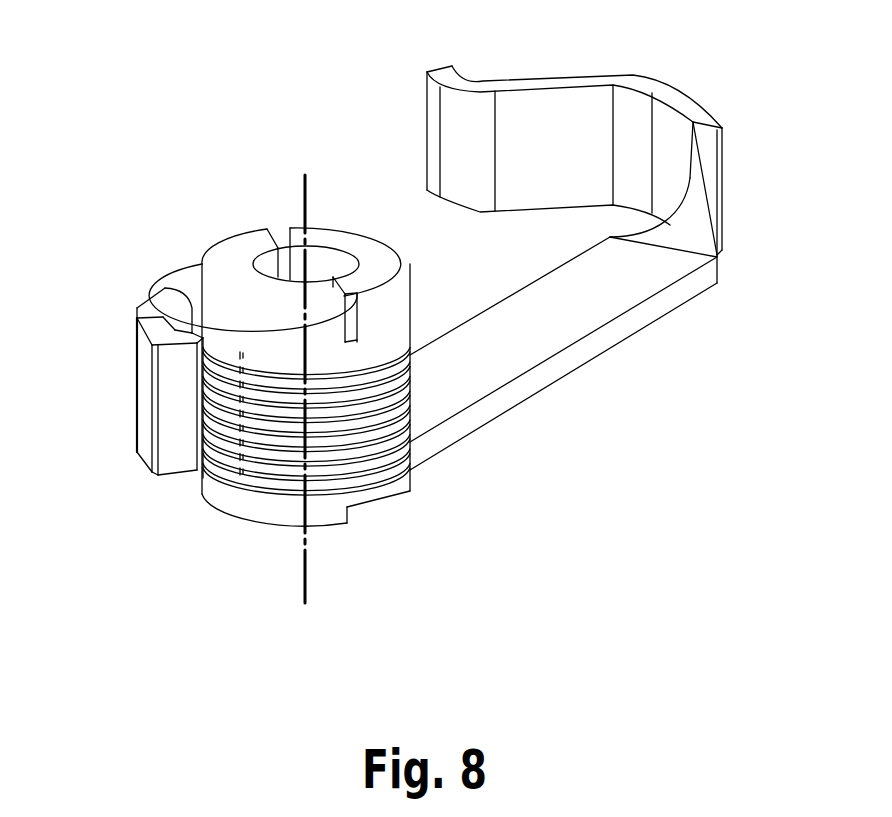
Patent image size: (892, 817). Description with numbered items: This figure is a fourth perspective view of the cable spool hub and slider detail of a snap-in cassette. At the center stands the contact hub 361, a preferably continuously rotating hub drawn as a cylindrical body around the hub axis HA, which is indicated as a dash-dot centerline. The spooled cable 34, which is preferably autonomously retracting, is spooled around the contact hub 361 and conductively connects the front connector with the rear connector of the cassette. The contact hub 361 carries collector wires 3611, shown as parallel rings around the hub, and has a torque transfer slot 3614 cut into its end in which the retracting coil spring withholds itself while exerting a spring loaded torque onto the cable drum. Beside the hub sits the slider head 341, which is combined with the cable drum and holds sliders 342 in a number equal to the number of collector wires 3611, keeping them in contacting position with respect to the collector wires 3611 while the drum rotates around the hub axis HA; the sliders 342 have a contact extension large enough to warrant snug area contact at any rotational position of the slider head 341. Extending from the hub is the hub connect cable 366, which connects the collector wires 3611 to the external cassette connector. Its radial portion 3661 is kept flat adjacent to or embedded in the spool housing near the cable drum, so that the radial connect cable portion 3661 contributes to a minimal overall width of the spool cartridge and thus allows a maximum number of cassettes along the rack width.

The contact hub 361 is at (233, 245).
The collector wires 3611 is at (313, 455).
The torque transfer slot 3614 is at (343, 277).
The spooled cable 34 is at (136, 309).
The slider head 341 is at (151, 452).
The sliders 342 is at (203, 338).
The hub connect cable 366 is at (698, 332).
The radial portion of the hub connect cable 3661 is at (620, 300).
The hub axis HA is at (302, 607).